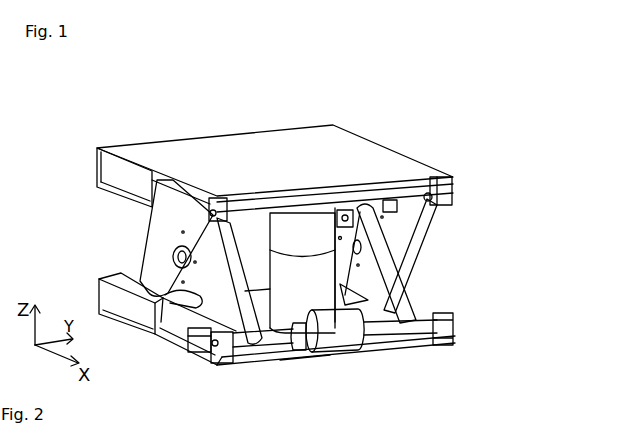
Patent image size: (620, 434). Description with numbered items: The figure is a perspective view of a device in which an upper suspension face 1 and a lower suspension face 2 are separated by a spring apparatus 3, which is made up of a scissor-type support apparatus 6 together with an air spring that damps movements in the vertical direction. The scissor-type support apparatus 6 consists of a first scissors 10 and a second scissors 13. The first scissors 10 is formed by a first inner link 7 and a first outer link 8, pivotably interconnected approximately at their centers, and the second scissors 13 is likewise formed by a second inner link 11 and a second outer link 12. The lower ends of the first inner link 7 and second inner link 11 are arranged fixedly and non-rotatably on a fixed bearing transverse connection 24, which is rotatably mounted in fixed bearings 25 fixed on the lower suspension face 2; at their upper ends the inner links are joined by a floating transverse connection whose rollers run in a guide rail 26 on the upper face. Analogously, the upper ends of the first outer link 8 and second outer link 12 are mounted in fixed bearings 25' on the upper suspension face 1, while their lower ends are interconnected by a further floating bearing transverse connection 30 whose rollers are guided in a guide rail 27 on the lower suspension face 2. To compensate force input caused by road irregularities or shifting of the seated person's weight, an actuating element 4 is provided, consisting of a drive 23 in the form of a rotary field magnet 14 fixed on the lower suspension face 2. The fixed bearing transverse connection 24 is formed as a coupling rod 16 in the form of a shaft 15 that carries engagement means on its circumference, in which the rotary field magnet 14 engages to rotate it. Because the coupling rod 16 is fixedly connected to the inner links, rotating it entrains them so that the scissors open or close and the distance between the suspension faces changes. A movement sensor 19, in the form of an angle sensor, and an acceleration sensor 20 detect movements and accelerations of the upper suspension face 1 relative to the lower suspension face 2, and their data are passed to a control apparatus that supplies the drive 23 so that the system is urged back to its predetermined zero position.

The upper suspension face 1 is at (333, 153).
The lower suspension face 2 is at (278, 362).
The spring apparatus 3 is at (320, 243).
The actuating element 4 is at (328, 362).
The scissor-type support apparatus 6 is at (497, 211).
The first inner link 7 is at (170, 207).
The first outer link 8 is at (160, 274).
The first scissors 10 is at (155, 235).
The second inner link 11 is at (408, 298).
The second outer link 12 is at (405, 222).
The second scissors 13 is at (406, 270).
The rotary field magnet 14 is at (354, 360).
The shaft 15 is at (369, 357).
The coupling rod 16 is at (448, 352).
The movement sensor 19 is at (303, 363).
The acceleration sensor 20 is at (190, 346).
The drive 23 is at (340, 330).
The fixed bearing transverse connection 24 is at (388, 200).
The fixed bearings 25 is at (350, 358).
The fixed bearings 25' is at (364, 187).
The guide rail 26 is at (103, 168).
The guide rail 27 is at (104, 296).
The floating bearing transverse connection 30 is at (257, 290).